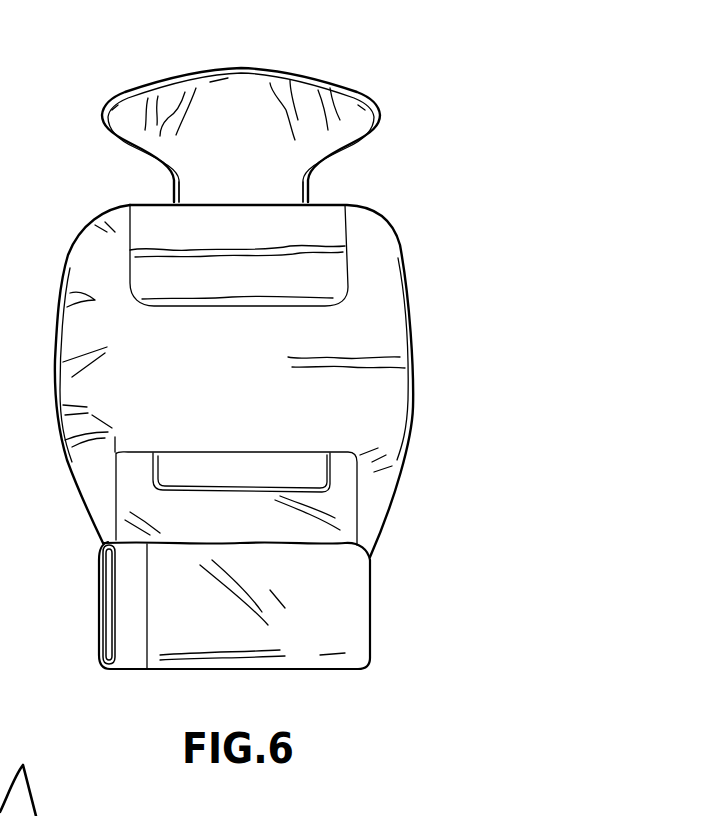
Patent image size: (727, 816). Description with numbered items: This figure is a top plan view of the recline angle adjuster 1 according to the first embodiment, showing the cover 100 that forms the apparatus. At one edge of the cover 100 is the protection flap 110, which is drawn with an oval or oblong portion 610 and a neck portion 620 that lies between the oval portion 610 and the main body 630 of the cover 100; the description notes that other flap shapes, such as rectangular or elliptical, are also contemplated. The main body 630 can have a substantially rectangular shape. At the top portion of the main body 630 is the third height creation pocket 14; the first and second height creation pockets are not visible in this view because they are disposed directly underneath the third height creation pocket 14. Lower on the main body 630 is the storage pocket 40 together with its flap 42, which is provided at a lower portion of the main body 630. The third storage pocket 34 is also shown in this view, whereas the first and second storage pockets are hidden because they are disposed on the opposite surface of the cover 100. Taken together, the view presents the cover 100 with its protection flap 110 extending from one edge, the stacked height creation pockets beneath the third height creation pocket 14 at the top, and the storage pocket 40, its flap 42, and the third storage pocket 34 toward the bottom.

The recline angle adjuster 1 is at (555, 273).
The third height creation pocket 14 is at (333, 273).
The third storage pocket 34 is at (353, 617).
The storage pocket 40 is at (337, 512).
The flap 42 is at (213, 470).
The cover 100 is at (450, 402).
The protection flap 110 is at (426, 138).
The oval portion 610 is at (258, 117).
The neck portion 620 is at (270, 175).
The main body 630 is at (386, 322).